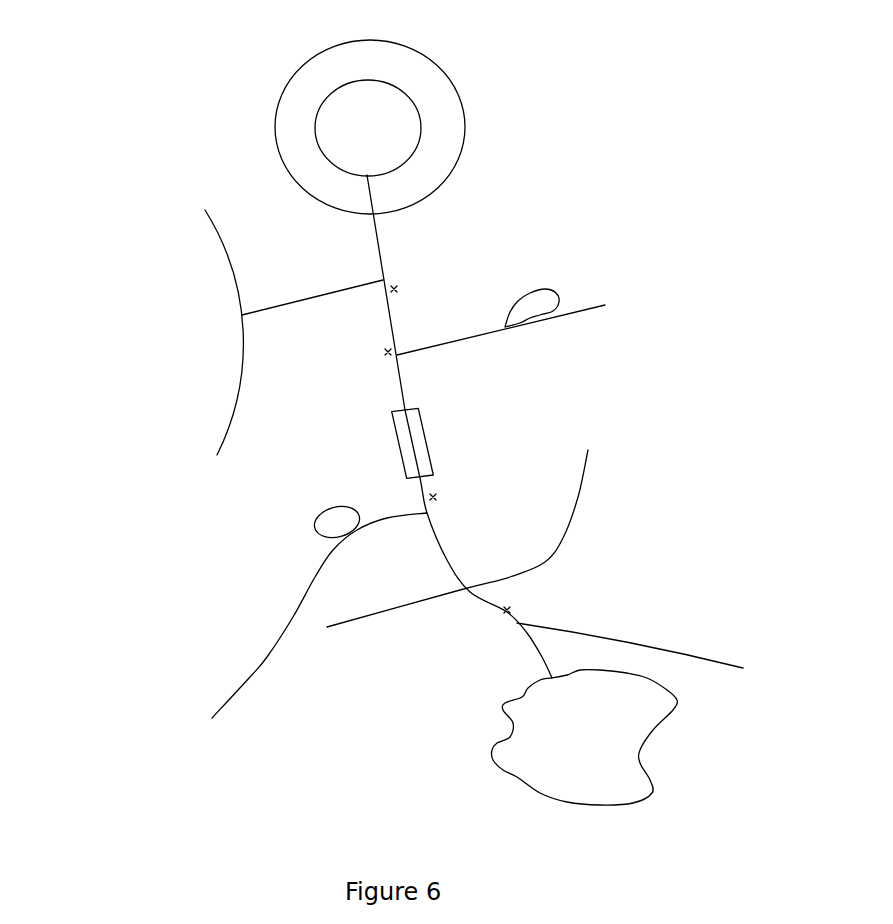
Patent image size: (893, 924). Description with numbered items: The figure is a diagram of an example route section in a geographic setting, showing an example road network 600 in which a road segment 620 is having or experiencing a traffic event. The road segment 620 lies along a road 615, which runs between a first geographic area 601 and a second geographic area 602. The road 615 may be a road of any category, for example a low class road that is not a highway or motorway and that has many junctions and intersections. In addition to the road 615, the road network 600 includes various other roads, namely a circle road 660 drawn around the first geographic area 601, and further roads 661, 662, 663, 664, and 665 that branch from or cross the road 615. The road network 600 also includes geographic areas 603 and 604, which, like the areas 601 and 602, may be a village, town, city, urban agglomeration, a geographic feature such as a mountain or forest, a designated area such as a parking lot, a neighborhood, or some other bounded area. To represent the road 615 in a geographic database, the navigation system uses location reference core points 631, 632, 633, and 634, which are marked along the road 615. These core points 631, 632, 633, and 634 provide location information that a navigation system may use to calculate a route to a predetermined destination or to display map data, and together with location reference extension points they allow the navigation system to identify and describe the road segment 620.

The road network 600 is at (85, 39).
The first geographic area 601 is at (405, 92).
The circle road 660 is at (464, 117).
The road 615 is at (378, 245).
The road 661 is at (232, 262).
The location reference core point 631 is at (398, 290).
The location reference core point 632 is at (385, 352).
The road 665 is at (583, 312).
The geographic area 603 is at (555, 292).
The road segment 620 is at (423, 427).
The location reference core point 633 is at (437, 495).
The geographic area 604 is at (335, 522).
The road 663 is at (563, 538).
The location reference core point 634 is at (512, 608).
The road 664 is at (658, 647).
The road 662 is at (250, 677).
The second geographic area 602 is at (502, 735).